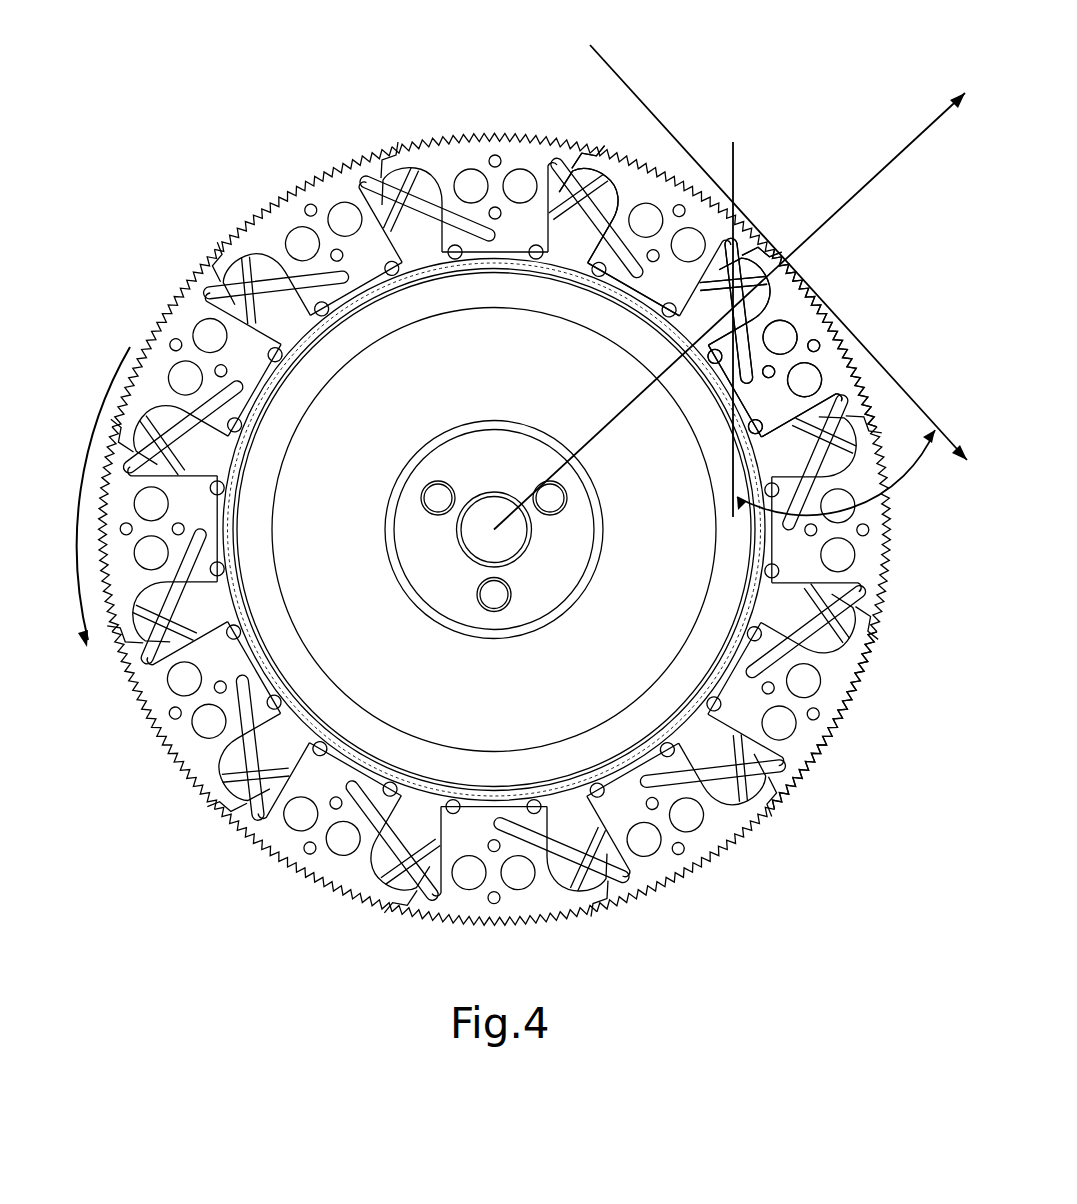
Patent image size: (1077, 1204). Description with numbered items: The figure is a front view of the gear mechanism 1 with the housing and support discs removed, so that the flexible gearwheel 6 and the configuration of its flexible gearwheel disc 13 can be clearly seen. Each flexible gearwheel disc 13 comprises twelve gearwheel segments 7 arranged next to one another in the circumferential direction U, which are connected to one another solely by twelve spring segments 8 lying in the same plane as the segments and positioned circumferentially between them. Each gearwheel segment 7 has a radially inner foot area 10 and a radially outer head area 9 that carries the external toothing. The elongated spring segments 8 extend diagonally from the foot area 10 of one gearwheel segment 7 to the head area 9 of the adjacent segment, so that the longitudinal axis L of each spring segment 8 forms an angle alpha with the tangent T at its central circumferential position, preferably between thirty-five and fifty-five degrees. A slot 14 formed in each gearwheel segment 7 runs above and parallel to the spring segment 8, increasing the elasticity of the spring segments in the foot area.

The gear mechanism 1 is at (208, 138).
The flexible gearwheel 6 is at (846, 744).
The flexible gearwheel disc 13 is at (795, 804).
The gearwheel segment 7 is at (640, 192).
The spring segment 8 is at (748, 288).
The head area 9 is at (830, 350).
The foot area 10 is at (840, 390).
The slot 14 is at (752, 360).